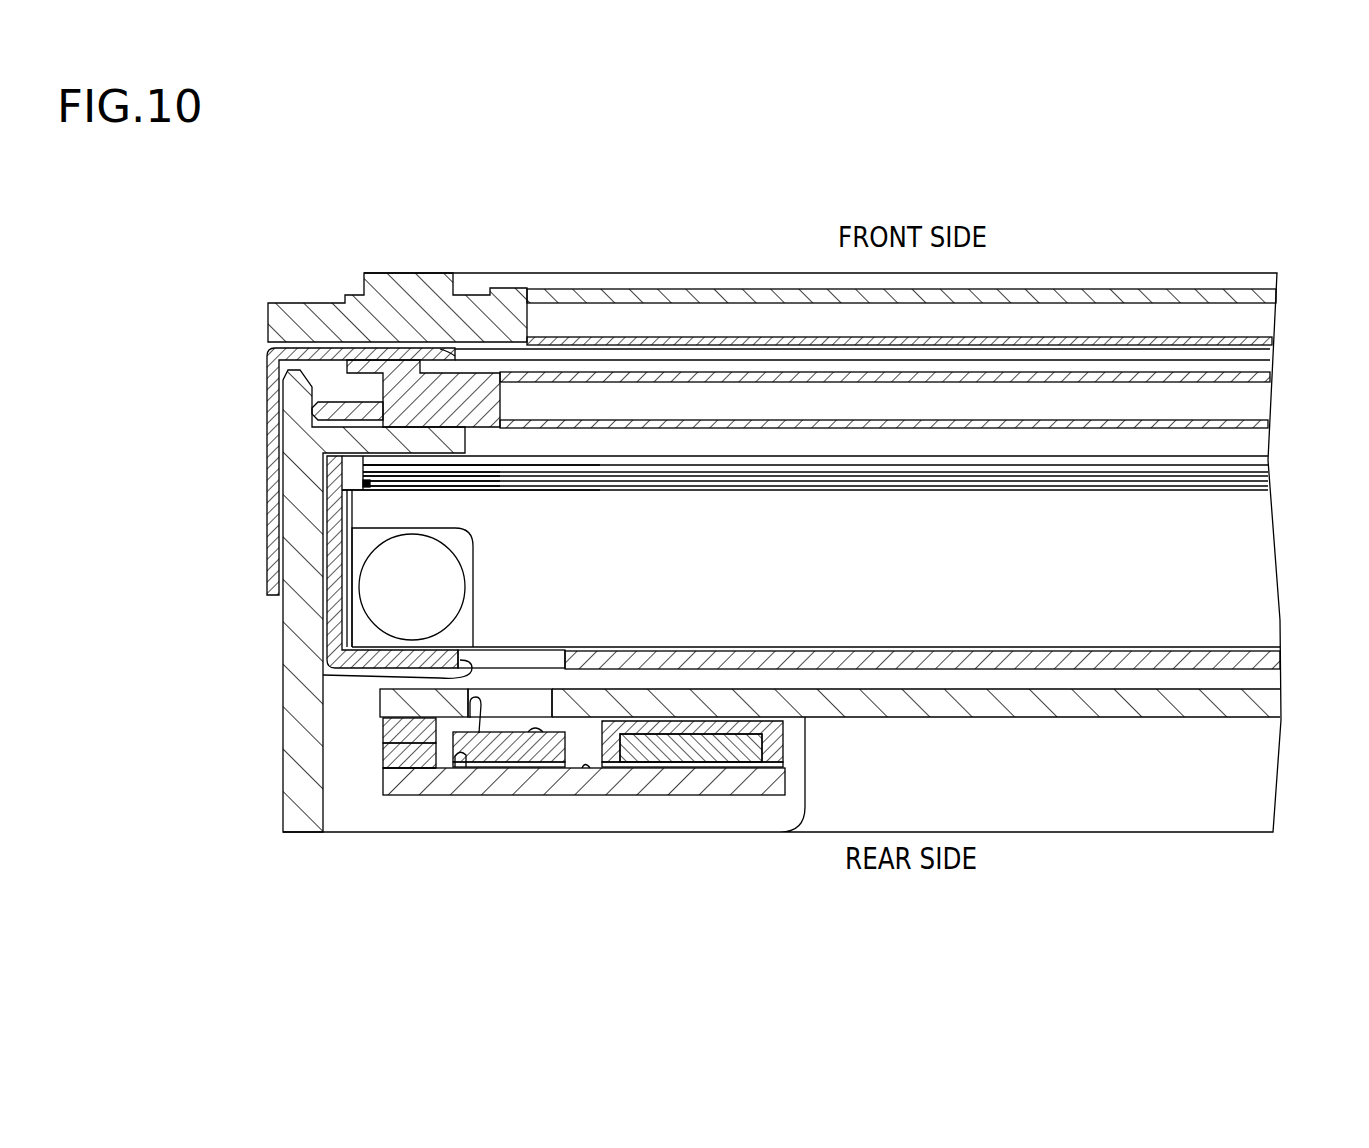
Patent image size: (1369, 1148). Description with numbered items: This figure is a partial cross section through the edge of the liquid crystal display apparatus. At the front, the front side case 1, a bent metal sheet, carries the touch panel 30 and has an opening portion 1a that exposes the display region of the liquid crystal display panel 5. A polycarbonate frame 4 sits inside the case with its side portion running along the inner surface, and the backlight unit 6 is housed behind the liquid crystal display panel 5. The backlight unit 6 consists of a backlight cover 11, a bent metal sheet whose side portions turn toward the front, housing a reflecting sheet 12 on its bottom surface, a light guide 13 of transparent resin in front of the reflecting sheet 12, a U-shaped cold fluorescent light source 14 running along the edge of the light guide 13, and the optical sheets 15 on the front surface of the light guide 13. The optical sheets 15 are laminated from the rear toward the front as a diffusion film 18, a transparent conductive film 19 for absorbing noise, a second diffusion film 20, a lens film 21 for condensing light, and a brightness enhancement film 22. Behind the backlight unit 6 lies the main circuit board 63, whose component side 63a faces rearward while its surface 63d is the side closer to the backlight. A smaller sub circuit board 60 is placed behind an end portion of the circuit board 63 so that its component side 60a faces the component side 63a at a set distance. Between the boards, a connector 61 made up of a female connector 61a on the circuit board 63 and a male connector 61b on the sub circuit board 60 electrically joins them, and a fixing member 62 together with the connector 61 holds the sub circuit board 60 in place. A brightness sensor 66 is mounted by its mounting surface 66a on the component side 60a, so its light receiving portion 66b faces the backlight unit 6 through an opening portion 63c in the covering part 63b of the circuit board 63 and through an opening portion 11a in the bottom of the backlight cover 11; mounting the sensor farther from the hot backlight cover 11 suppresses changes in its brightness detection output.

The front side case 1 is at (266, 358).
The opening portion 1a is at (455, 352).
The frame 4 is at (298, 427).
The liquid crystal display panel 5 is at (327, 412).
The backlight unit 6 is at (165, 470).
The backlight cover 11 is at (333, 652).
The opening portion for lighting 11a is at (323, 675).
The reflecting sheet 12 is at (347, 622).
The light guide 13 is at (375, 515).
The light source 14 is at (375, 583).
The optical sheets 15 is at (203, 437).
The diffusion film 18 is at (377, 495).
The transparent conductive film 19 is at (370, 488).
The diffusion film 20 is at (366, 481).
The lens film 21 is at (366, 473).
The brightness enhancement film 22 is at (366, 465).
The touch panel 30 is at (270, 320).
The sub circuit board 60 is at (390, 783).
The component side 60a is at (585, 767).
The connector 61 is at (702, 882).
The female connector 61a is at (777, 763).
The male connector 61b is at (717, 763).
The fixing member 62 is at (380, 767).
The circuit board 63 is at (390, 697).
The component side 63a is at (383, 757).
The part of the circuit board 63b is at (405, 710).
The opening portion for lighting 63c is at (461, 756).
The surface of the circuit board 63d is at (1263, 690).
The brightness sensor 66 is at (457, 733).
The mounting surface 66a is at (502, 768).
The light receiving portion 66b is at (527, 768).